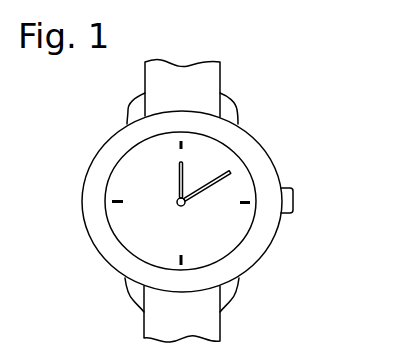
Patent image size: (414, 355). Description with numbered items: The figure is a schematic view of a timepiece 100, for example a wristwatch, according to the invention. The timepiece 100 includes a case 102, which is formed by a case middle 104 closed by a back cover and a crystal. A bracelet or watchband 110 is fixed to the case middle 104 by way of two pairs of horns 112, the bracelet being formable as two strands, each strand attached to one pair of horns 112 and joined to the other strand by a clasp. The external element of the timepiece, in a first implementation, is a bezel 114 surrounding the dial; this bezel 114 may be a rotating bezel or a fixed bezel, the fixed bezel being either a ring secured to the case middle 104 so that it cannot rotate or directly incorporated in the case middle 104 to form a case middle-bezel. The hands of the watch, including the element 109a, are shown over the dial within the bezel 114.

The timepiece 100 is at (323, 109).
The case 102 is at (282, 157).
The case middle 104 is at (256, 183).
The hour hand 109a is at (203, 188).
The bracelet 110 is at (203, 82).
The horns 112 is at (231, 105).
The bezel 114 is at (108, 156).